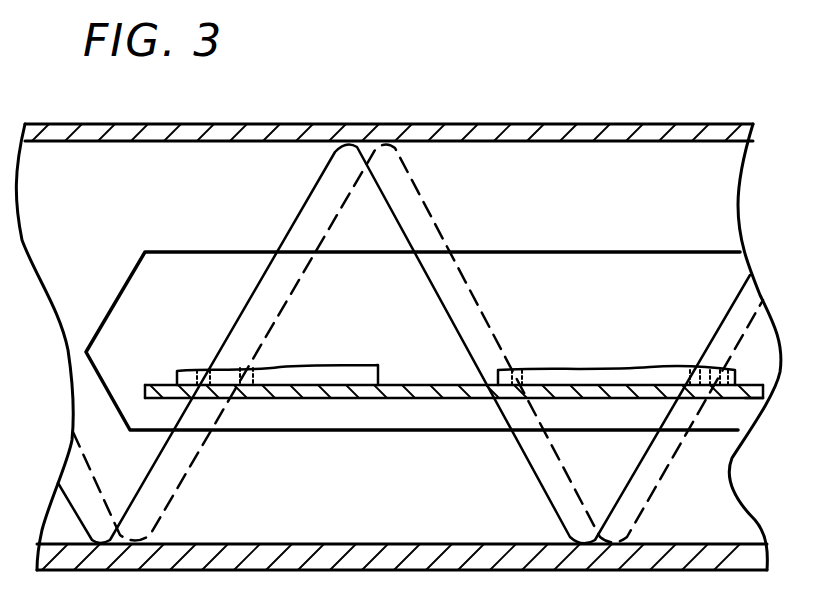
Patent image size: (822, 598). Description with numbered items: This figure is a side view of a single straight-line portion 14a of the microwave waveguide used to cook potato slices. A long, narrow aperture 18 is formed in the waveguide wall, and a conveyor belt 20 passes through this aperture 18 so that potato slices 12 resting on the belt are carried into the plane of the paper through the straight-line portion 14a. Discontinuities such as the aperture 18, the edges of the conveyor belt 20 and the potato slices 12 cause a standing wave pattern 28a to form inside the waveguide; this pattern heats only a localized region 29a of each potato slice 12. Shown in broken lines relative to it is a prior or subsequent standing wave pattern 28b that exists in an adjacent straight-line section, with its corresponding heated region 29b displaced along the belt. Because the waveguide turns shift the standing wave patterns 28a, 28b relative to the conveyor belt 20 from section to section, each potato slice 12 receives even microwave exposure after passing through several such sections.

The straight-line portion of the waveguide 14a is at (541, 122).
The aperture 18 is at (598, 254).
The conveyor belt 20 is at (343, 400).
The potato slice 12 is at (333, 363).
The localized heated region 29a is at (683, 370).
The localized heated region 29b is at (755, 403).
The standing wave pattern 28a is at (152, 468).
The standing wave pattern 28b is at (193, 462).